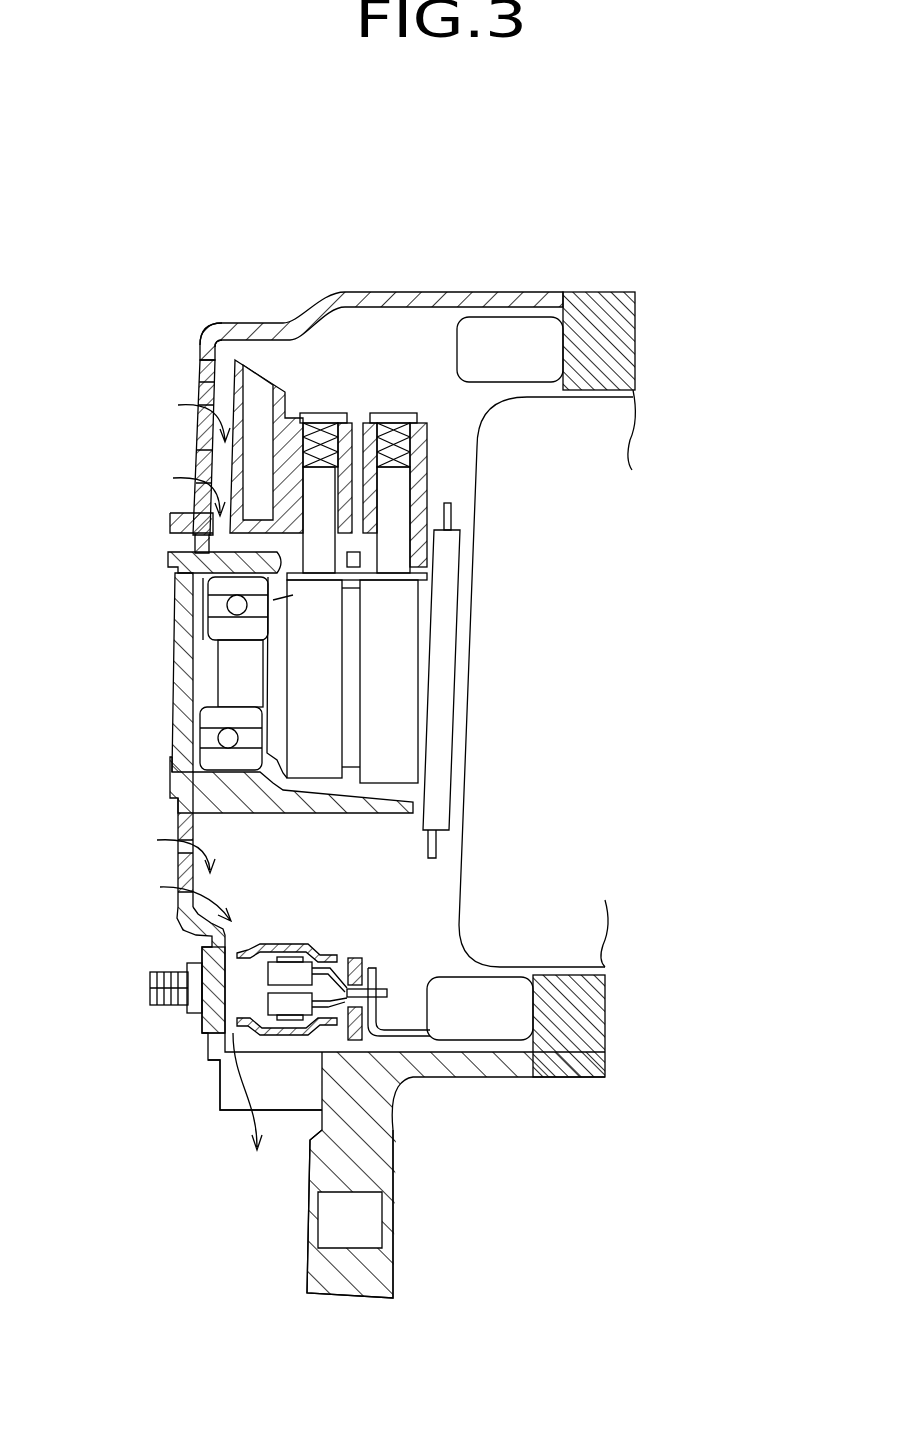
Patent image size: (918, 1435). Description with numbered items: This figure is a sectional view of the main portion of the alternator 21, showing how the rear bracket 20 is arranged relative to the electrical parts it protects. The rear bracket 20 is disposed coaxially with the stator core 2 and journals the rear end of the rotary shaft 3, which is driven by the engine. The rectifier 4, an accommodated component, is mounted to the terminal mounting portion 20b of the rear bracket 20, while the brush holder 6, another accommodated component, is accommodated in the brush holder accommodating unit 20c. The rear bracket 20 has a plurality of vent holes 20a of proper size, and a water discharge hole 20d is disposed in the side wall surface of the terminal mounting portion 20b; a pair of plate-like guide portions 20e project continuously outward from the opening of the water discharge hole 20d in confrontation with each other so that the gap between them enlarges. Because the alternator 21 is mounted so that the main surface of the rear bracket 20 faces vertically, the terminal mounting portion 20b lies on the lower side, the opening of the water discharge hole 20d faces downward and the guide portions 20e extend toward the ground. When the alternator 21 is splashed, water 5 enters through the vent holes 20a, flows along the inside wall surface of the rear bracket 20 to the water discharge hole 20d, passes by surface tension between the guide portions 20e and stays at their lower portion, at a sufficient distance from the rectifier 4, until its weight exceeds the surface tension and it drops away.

The stator core 2 is at (603, 345).
The rotary shaft 3 is at (232, 670).
The rectifier 4 is at (300, 943).
The water 5 is at (207, 477).
The brush holder 6 is at (294, 407).
The rear bracket 20 is at (378, 277).
The vent holes 20a is at (202, 460).
The terminal mounting portion 20b is at (207, 1022).
The brush holder accommodating unit 20c is at (203, 355).
The water discharge hole 20d is at (283, 1057).
The guide portions 20e is at (230, 1078).
The alternator 21 is at (597, 552).